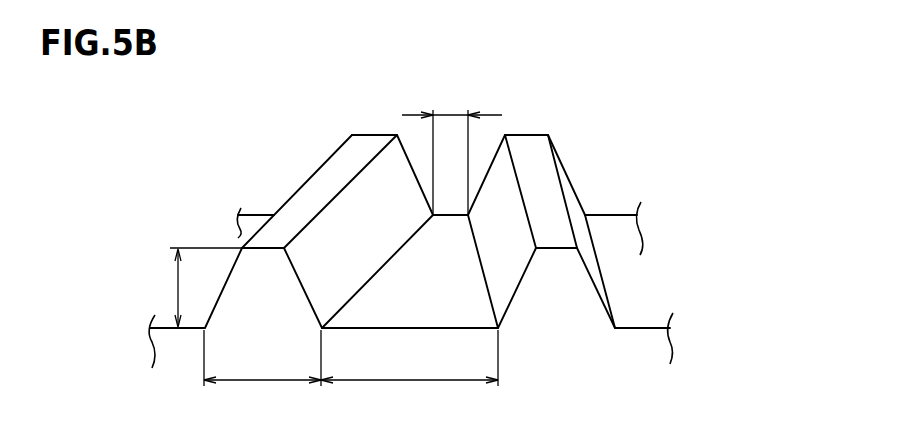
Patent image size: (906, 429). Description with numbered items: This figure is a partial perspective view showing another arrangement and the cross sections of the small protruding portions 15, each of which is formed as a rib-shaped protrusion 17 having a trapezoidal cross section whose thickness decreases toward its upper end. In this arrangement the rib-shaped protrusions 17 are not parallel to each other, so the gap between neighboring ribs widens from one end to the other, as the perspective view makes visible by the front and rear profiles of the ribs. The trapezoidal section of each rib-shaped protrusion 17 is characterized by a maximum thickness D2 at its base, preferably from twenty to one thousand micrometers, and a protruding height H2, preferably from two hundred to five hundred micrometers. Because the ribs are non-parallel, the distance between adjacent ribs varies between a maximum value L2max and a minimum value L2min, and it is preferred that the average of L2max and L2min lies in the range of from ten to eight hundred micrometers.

The small protruding portion 15 is at (411, 246).
The rib-shaped protrusion 17 is at (315, 172).
The protruding height H2 is at (188, 287).
The maximum thickness D2 is at (262, 372).
The minimum value of the distance L2min is at (452, 150).
The maximum value of the distance L2max is at (409, 372).